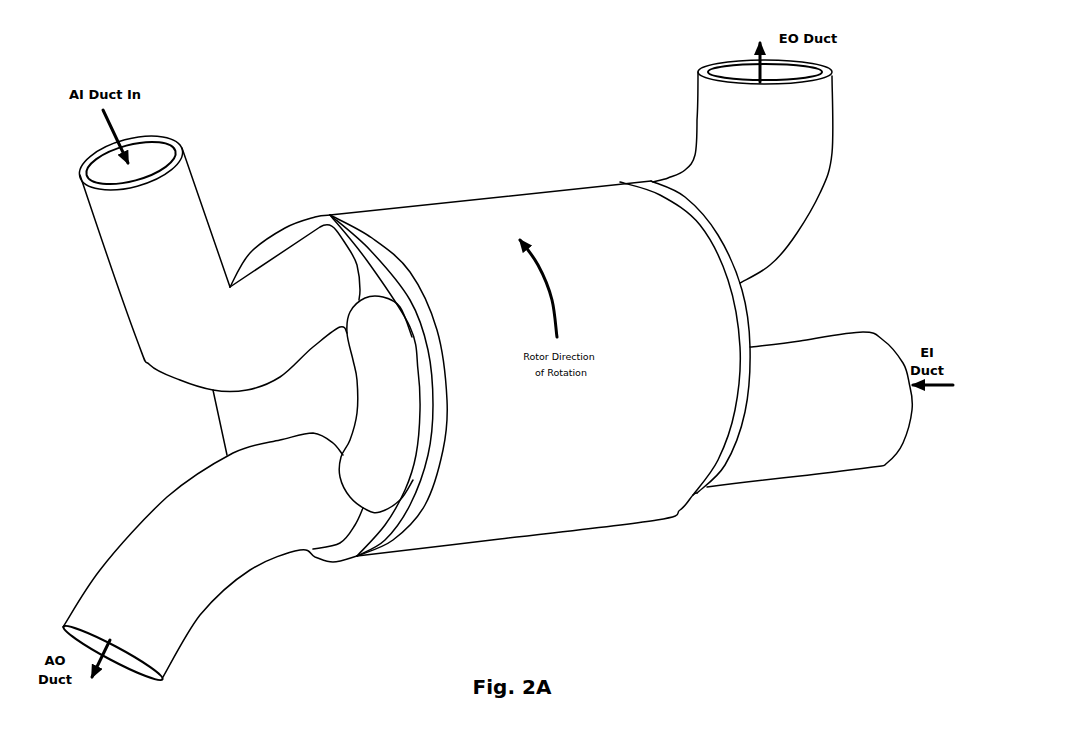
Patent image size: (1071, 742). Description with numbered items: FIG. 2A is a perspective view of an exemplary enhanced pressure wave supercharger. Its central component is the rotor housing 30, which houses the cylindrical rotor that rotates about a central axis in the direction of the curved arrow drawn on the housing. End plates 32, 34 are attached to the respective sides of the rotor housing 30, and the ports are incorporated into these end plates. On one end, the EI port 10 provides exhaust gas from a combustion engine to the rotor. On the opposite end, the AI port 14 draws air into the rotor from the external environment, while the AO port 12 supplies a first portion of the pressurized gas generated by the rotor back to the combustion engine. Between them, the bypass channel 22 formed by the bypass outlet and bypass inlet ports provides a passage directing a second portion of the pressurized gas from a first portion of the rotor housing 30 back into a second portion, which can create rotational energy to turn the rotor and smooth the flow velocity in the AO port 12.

The EI port 10 is at (697, 480).
The AO port 12 is at (317, 493).
The AI port 14 is at (335, 273).
The channel 22 is at (393, 403).
The rotor housing 30 is at (472, 203).
The end plate 32 is at (273, 237).
The end plate 34 is at (647, 178).